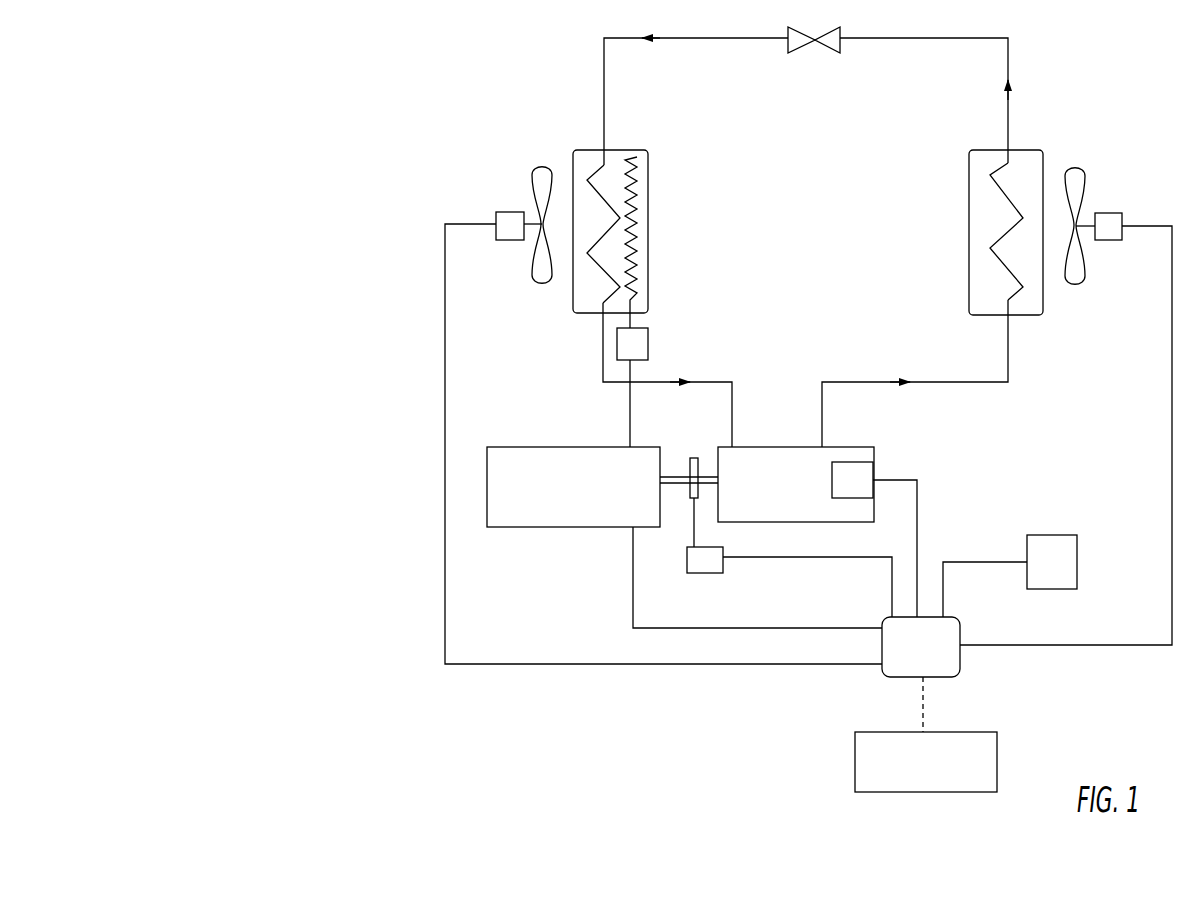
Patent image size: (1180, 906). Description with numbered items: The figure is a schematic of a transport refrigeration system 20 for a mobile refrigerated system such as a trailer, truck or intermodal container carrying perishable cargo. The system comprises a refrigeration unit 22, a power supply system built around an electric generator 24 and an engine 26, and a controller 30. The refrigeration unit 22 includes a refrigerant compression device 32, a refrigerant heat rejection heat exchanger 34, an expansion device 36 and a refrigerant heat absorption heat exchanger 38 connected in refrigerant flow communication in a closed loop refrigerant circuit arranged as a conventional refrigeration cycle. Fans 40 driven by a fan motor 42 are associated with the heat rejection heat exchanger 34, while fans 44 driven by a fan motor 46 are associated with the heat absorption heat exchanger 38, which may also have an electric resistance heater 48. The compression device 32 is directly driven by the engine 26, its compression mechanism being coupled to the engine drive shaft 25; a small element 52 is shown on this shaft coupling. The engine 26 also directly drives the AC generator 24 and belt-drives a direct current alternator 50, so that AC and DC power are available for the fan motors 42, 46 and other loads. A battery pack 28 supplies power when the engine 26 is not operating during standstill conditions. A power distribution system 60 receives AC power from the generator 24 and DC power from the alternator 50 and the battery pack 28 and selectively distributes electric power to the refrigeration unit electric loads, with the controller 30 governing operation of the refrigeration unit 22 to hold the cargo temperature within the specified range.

The transport refrigeration system 20 is at (288, 98).
The refrigeration unit 22 is at (541, 66).
The electric generator 24 is at (855, 462).
The drive shaft 25 is at (675, 477).
The engine 26 is at (523, 527).
The battery pack 28 is at (1060, 535).
The controller 30 is at (855, 768).
The refrigerant compression device 32 is at (781, 447).
The refrigerant heat rejection heat exchanger 34 is at (990, 174).
The expansion device 36 is at (817, 42).
The refrigerant heat absorption heat exchanger 38 is at (621, 176).
The fan 40 is at (1085, 186).
The fan motor 42 is at (1122, 213).
The fan 44 is at (538, 168).
The fan motor 46 is at (510, 212).
The electric resistance heater 48 is at (650, 348).
The direct current alternator 50 is at (697, 573).
The shaft coupling element 52 is at (696, 458).
The power distribution system 60 is at (958, 660).